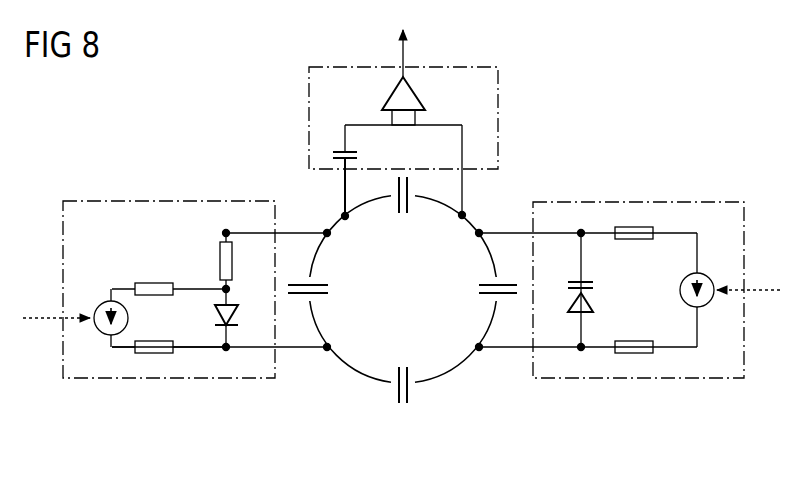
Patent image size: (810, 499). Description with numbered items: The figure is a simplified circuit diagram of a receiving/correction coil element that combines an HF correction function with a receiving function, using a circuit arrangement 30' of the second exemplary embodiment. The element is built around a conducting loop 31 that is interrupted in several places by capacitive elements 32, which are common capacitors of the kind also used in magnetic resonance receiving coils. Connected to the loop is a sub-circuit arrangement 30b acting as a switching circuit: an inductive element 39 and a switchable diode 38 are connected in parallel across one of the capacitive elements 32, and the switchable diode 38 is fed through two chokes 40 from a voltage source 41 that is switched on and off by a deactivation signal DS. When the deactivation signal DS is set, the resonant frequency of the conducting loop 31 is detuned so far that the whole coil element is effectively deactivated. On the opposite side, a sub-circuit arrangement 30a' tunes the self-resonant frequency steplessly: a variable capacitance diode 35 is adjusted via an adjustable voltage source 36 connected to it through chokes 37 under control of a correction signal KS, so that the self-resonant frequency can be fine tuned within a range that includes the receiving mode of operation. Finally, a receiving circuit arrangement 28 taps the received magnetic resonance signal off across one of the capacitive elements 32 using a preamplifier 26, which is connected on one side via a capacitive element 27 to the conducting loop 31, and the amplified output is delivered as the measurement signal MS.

The preamplifier 26 is at (416, 93).
The capacitive element 27 is at (340, 150).
The receiving circuit arrangement 28 is at (498, 120).
The conducting loop 31 is at (469, 220).
The capacitive elements 32 is at (398, 205).
The sub-circuit arrangement 30b is at (165, 200).
The sub-circuit arrangement 30a' is at (638, 264).
The circuit arrangement 30' is at (403, 434).
The variable capacitance diode 35 is at (568, 299).
The adjustable voltage source 36 is at (702, 307).
The chokes 37 is at (634, 240).
The switchable diode 38 is at (235, 305).
The inductive element 39 is at (218, 262).
The chokes 40 is at (153, 297).
The voltage source 41 is at (95, 303).
The deactivation signal DS is at (46, 317).
The correction signal KS is at (772, 289).
The measurement signal MS is at (400, 52).